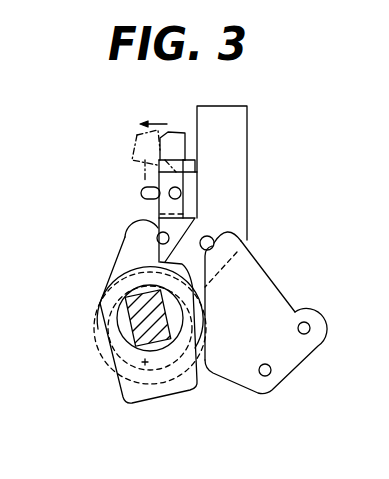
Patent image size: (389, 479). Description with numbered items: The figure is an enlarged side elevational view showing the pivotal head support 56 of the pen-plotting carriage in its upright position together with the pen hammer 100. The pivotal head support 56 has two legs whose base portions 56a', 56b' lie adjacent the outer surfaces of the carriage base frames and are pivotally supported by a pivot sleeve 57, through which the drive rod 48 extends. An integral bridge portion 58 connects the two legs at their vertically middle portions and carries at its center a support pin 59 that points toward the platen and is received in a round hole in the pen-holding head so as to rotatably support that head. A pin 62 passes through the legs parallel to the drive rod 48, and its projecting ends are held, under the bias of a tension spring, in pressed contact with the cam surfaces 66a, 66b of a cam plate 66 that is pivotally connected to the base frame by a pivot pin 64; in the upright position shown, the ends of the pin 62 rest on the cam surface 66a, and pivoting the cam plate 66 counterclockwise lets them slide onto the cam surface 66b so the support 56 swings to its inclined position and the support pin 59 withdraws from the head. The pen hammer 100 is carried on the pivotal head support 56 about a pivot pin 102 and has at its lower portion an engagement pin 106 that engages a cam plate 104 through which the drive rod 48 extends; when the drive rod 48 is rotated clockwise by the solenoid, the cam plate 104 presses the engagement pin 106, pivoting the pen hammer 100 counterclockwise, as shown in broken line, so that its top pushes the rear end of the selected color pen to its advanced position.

The drive rod 48 is at (130, 308).
The pivotal head support 56 is at (249, 130).
The base portion of leg 56a 56a' is at (38, 363).
The base portion of leg 56b 56b' is at (108, 309).
The pivot sleeve 57 is at (126, 381).
The bridge portion 58 is at (158, 210).
The support pin 59 is at (142, 191).
The pin 62 is at (211, 236).
The pivot pin 64 is at (309, 333).
The cam plate 66 is at (238, 373).
The cam surface 66a is at (244, 237).
The cam surface 66b is at (272, 284).
The pen hammer 100 is at (176, 135).
The pivot pin 102 is at (182, 193).
The cam plate 104 is at (135, 250).
The engagement pin 106 is at (157, 238).